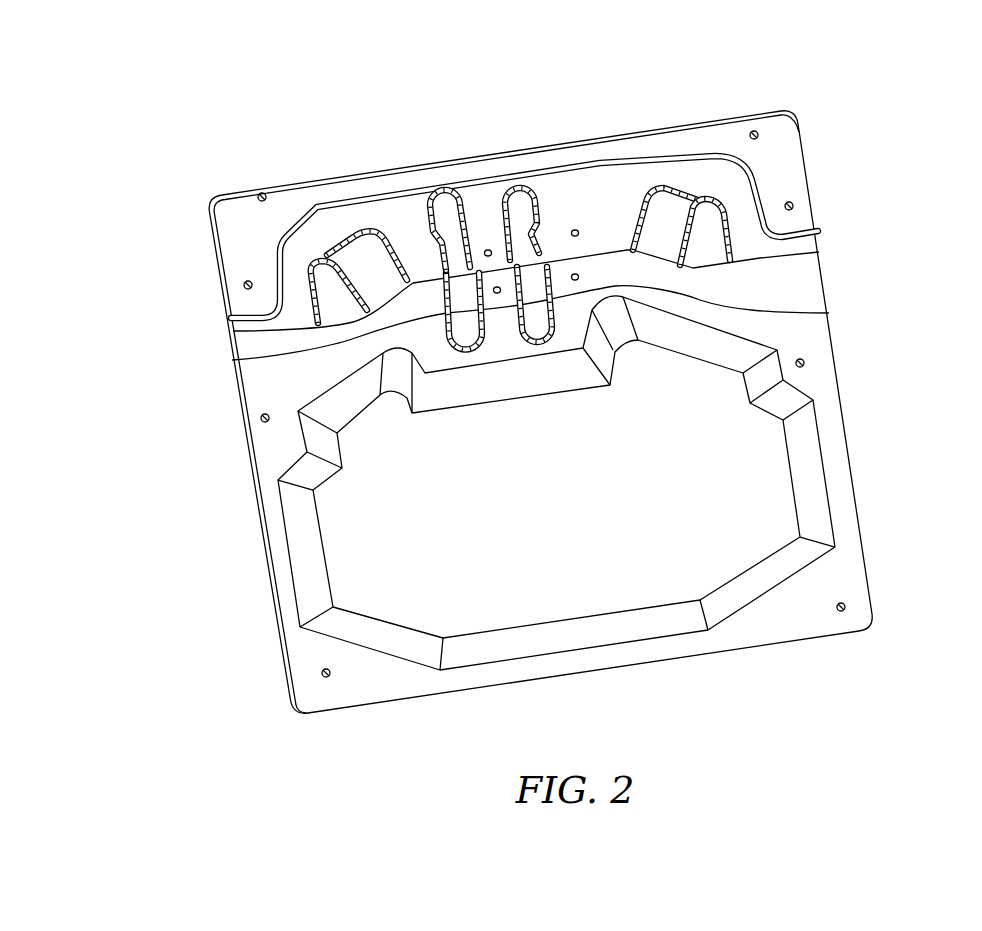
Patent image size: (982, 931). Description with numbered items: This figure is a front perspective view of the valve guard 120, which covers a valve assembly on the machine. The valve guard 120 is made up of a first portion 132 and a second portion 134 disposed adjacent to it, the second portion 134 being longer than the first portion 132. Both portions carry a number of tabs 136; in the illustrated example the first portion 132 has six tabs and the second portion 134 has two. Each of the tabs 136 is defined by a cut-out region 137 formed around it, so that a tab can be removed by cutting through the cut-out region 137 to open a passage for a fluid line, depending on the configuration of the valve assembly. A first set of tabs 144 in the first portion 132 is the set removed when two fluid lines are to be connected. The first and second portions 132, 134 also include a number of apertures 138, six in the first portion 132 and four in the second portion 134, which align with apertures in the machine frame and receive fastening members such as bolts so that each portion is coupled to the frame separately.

The valve guard 120 is at (880, 97).
The first portion 132 is at (232, 257).
The second portion 134 is at (255, 377).
The tabs 136 is at (350, 252).
The cut-out region 137 is at (467, 187).
The apertures 138 is at (281, 197).
The first set of tabs 144 is at (328, 275).